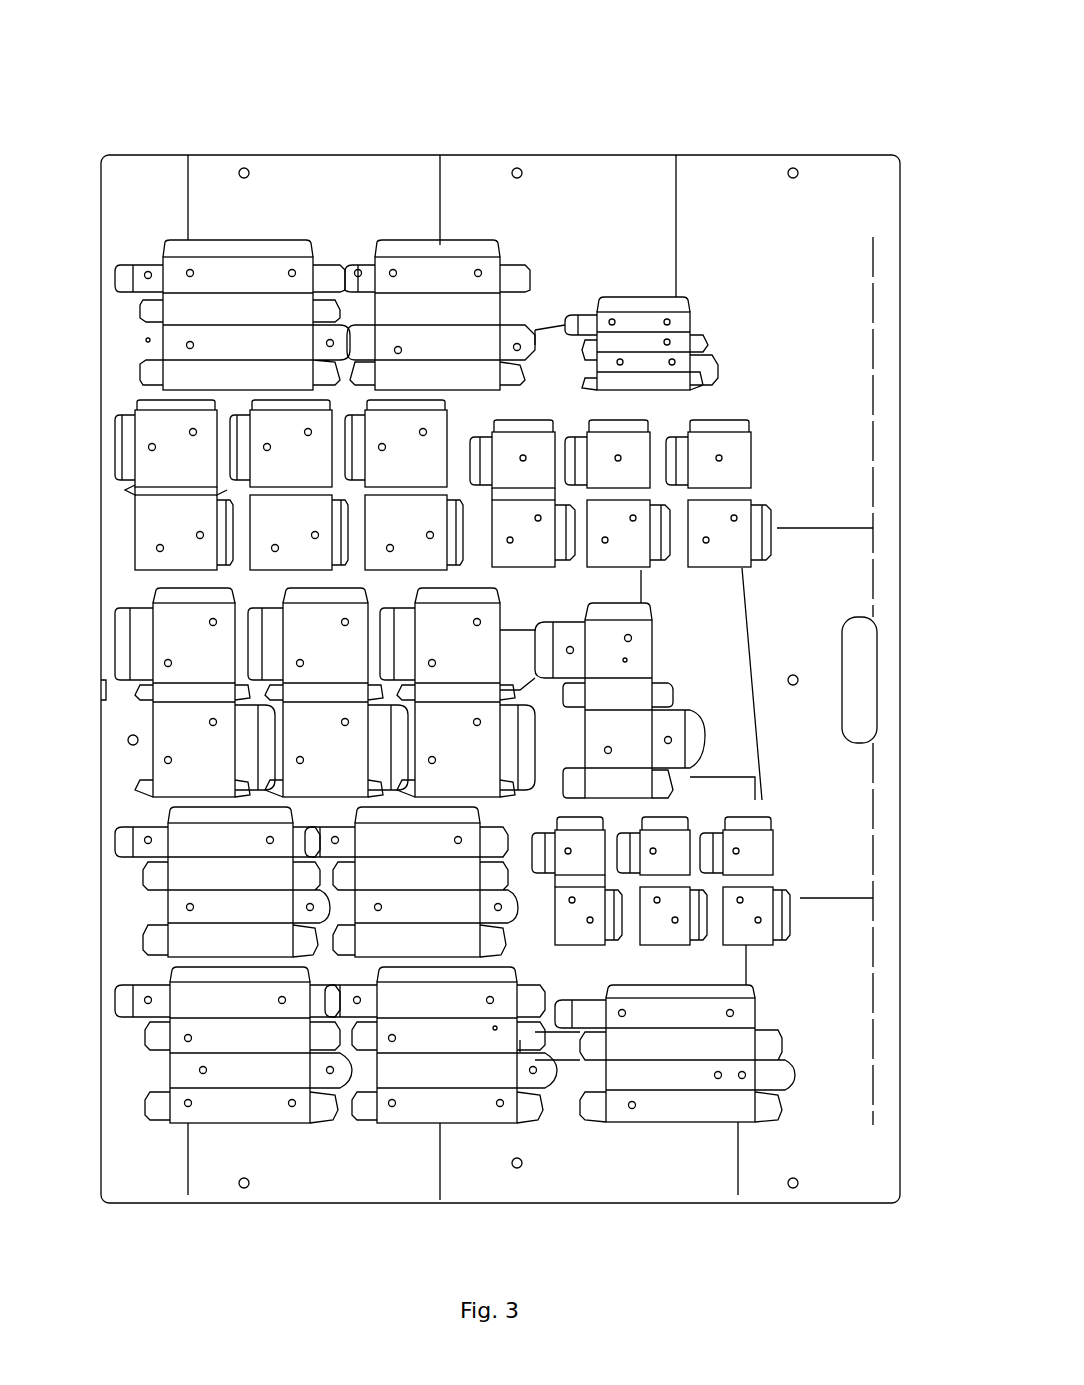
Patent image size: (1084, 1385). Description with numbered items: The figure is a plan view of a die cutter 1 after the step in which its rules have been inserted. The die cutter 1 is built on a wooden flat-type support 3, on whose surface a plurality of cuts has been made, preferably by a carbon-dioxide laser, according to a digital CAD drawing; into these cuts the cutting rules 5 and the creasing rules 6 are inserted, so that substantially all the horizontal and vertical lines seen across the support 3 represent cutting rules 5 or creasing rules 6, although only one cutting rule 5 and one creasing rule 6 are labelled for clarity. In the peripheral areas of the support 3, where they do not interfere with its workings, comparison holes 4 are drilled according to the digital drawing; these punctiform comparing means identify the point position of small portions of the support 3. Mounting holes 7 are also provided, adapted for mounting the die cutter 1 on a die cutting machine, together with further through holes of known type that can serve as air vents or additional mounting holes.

The die cutter 1 is at (864, 118).
The wooden flat-type support 3 is at (862, 1172).
The comparison holes 4 is at (523, 676).
The cutting rule 5 is at (215, 240).
The creasing rule 6 is at (180, 250).
The mounting holes 7 is at (244, 170).